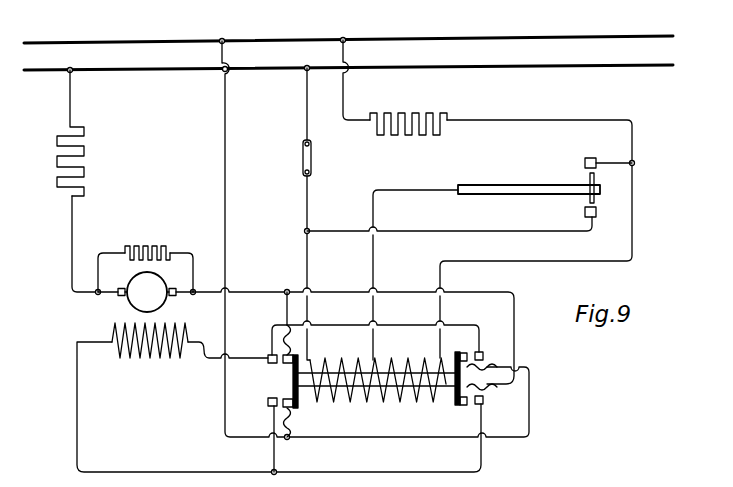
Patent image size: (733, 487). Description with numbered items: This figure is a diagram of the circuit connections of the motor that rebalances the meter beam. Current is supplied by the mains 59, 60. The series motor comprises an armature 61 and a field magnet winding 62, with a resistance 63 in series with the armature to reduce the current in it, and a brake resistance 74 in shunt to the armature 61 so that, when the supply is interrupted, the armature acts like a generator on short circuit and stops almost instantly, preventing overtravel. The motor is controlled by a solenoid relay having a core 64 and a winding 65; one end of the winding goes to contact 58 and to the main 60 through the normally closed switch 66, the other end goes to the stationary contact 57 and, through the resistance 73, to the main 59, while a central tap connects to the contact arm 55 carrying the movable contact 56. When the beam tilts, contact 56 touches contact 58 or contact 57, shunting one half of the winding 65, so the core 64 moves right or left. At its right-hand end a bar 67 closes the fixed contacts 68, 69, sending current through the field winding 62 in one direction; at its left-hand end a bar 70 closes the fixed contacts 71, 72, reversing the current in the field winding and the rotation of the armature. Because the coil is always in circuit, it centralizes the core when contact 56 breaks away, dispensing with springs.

The contact arm 55 is at (509, 189).
The contact 56 is at (588, 197).
The adjustable contact 57 is at (588, 158).
The adjustable contact 58 is at (597, 212).
The main 59 is at (428, 40).
The main 60 is at (507, 67).
The armature 61 is at (145, 292).
The field magnet winding 62 is at (124, 362).
The resistance 63 is at (85, 154).
The core 64 is at (358, 380).
The winding 65 is at (407, 363).
The switch 66 is at (311, 157).
The bar 67 is at (453, 392).
The fixed contact 68 is at (484, 355).
The fixed contact 69 is at (483, 402).
The bar 70 is at (298, 404).
The fixed contact 71 is at (268, 356).
The fixed contact 72 is at (267, 407).
The resistance 73 is at (396, 118).
The resistance 74 is at (152, 246).